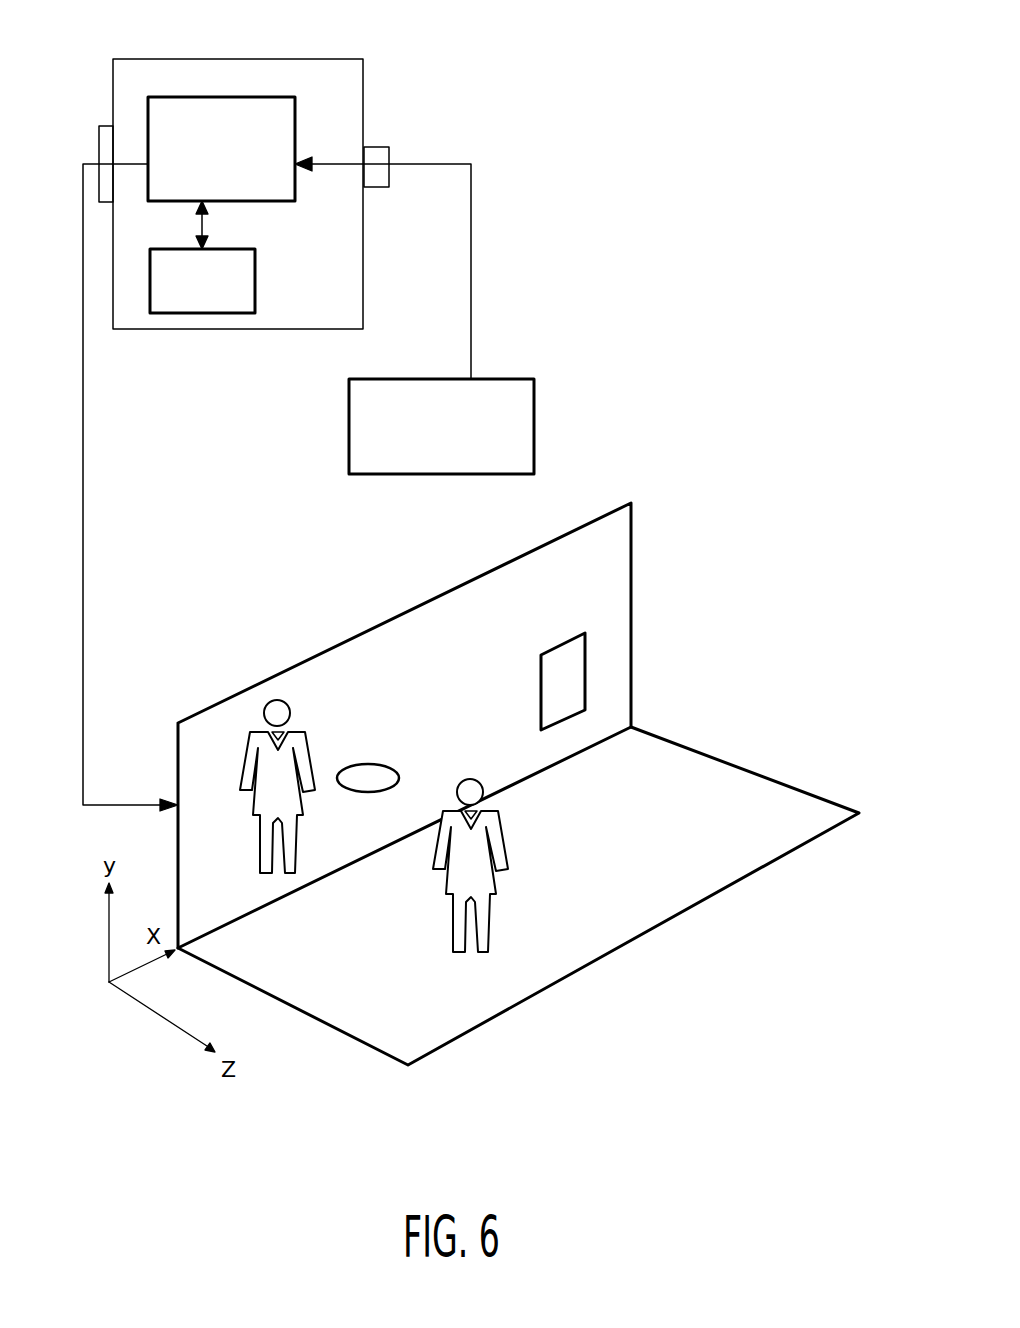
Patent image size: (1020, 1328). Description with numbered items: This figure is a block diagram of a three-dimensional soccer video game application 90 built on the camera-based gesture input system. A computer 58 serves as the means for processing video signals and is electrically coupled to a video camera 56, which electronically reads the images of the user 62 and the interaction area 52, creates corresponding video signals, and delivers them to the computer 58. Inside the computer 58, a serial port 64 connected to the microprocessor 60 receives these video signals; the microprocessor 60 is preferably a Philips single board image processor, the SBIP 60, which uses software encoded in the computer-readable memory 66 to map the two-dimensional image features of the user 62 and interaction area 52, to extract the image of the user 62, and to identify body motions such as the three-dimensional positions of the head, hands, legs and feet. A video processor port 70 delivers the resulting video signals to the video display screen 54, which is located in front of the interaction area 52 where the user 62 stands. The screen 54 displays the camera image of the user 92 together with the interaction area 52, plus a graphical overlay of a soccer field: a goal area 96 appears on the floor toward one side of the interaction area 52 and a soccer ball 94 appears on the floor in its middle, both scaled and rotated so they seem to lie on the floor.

The interaction area 52 is at (662, 853).
The video display screen 54 is at (596, 540).
The video camera 56 is at (534, 403).
The computer 58 is at (365, 82).
The microprocessor 60 is at (210, 97).
The user 62 is at (453, 940).
The serial port 64 is at (373, 155).
The computer-readable memory 66 is at (202, 313).
The video processor port 70 is at (108, 125).
The system 90 is at (666, 127).
The user 92 is at (275, 702).
The soccer ball 94 is at (368, 763).
The goal area 96 is at (585, 680).